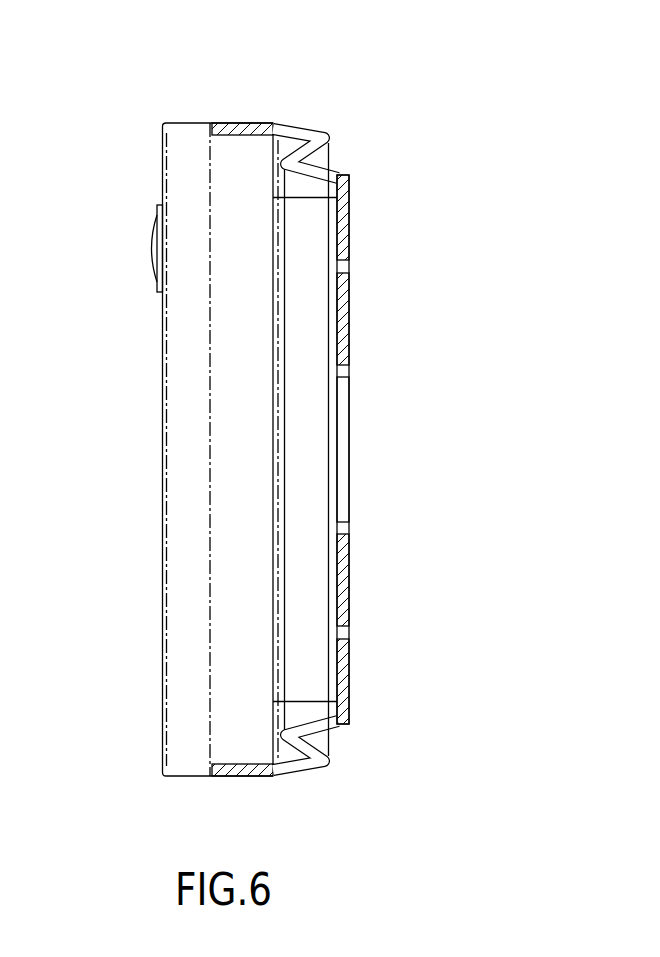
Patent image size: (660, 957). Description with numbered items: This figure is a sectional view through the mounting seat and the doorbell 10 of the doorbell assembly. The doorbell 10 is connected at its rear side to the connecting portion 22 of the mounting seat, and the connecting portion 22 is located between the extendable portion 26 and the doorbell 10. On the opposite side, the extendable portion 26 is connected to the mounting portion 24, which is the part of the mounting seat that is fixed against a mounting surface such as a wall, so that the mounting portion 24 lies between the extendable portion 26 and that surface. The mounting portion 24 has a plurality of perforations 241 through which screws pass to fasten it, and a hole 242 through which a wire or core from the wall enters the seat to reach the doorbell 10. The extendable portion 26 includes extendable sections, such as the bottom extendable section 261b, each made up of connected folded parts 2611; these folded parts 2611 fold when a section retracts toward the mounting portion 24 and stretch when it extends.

The doorbell 10 is at (160, 102).
The connecting portion 22 is at (231, 105).
The mounting portion 24 is at (410, 395).
The extendable portion 26 is at (404, 436).
The perforations 241 is at (343, 268).
The hole 242 is at (343, 430).
The folded parts 2611 is at (426, 476).
The bottom extendable section 261b is at (303, 772).